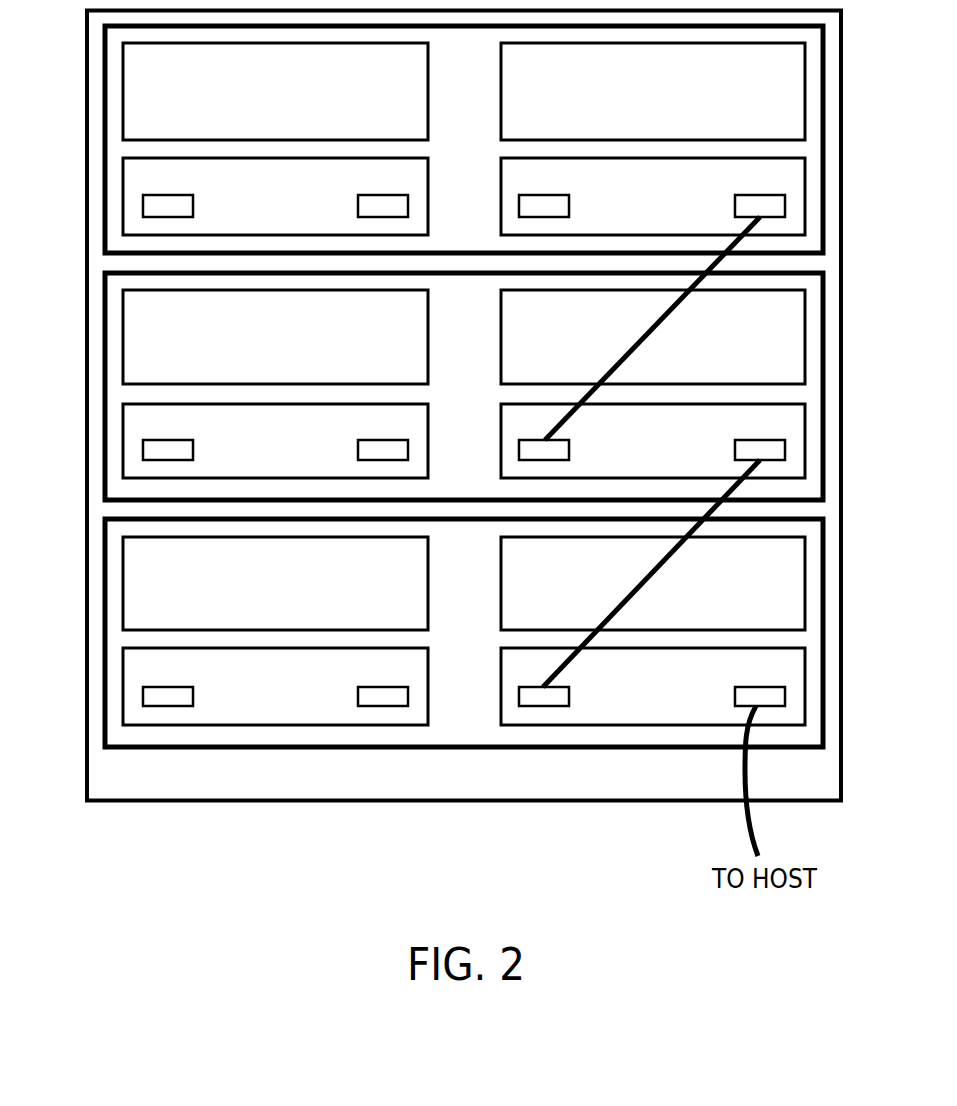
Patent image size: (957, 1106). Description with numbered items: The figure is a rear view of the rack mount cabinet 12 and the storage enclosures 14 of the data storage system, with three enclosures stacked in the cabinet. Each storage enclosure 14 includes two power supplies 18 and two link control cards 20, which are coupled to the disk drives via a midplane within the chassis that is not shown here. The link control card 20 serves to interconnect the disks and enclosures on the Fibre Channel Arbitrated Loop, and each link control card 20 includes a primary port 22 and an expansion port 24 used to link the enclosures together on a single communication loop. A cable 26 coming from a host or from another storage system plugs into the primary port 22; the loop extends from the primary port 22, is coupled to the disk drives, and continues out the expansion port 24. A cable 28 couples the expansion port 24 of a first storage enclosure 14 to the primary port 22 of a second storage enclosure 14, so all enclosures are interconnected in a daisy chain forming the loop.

The rack mount cabinet 12 is at (86, 203).
The storage enclosure 14 is at (103, 448).
The power supply 18 is at (123, 578).
The link control card 20 is at (123, 686).
The primary port 22 is at (358, 702).
The expansion port 24 is at (193, 702).
The cable 26 is at (758, 834).
The cable 28 is at (648, 577).